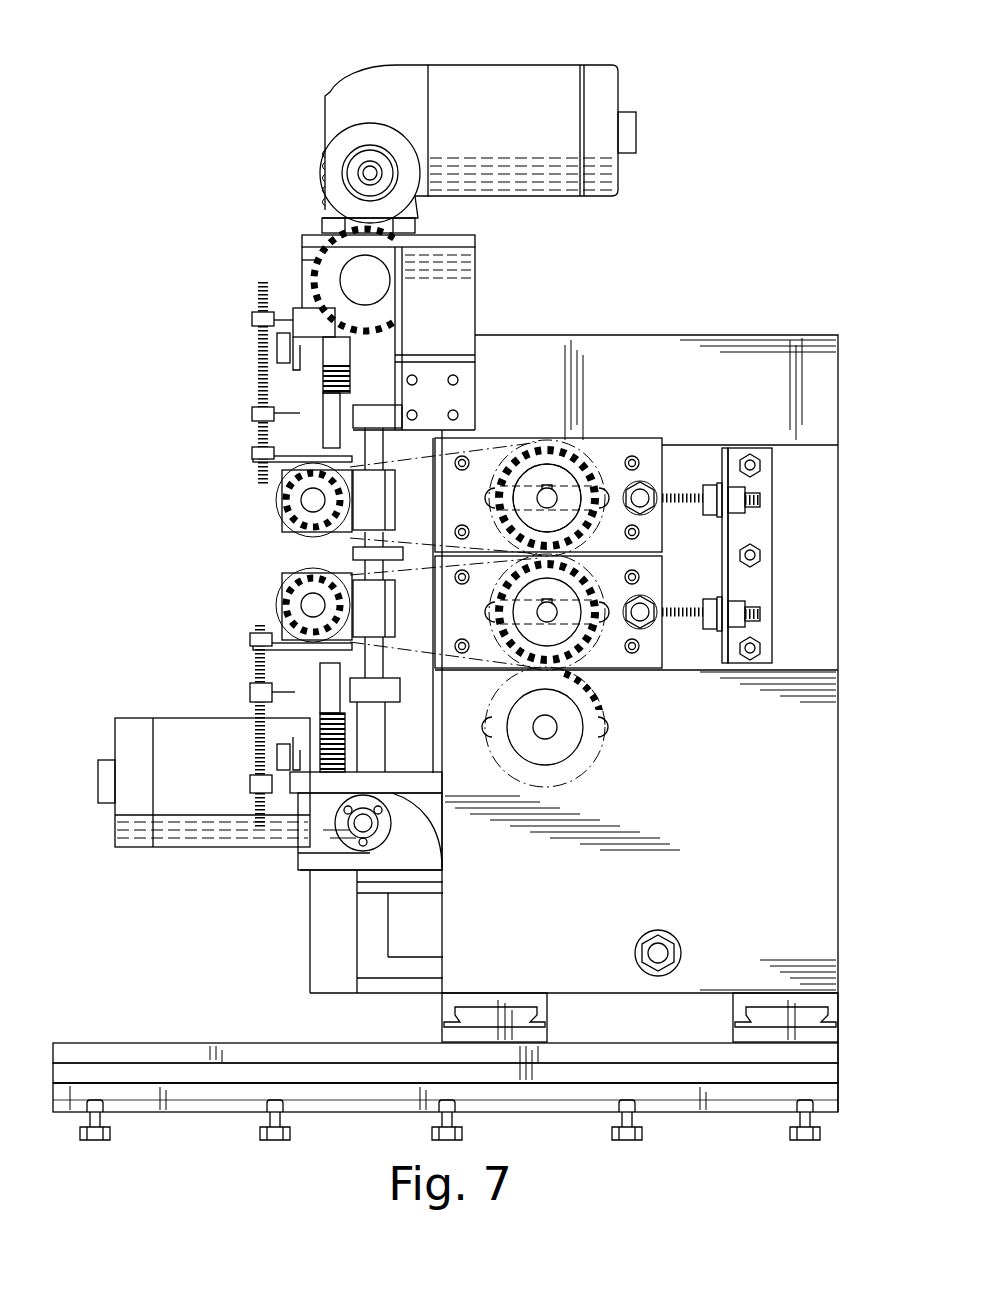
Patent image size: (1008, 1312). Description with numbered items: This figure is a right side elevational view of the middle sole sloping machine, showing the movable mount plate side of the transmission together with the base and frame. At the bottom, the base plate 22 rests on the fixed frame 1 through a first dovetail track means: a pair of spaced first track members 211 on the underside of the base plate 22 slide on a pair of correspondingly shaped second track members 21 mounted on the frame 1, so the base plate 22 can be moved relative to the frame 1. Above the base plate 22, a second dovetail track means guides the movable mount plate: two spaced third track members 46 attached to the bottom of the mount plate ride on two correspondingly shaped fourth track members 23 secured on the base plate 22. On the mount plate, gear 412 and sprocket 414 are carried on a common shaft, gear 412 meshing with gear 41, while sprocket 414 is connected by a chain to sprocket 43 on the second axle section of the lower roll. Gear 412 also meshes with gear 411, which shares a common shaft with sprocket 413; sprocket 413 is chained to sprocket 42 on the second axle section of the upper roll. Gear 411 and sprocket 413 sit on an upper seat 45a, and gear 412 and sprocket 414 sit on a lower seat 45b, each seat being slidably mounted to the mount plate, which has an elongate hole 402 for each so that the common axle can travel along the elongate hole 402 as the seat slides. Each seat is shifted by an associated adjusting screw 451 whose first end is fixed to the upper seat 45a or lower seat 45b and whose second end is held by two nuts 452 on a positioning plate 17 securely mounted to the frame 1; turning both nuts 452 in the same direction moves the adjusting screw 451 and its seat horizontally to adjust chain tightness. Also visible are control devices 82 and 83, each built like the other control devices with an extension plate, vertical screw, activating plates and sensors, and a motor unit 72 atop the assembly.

The fixed frame 1 is at (830, 550).
The positioning plate 17 is at (724, 573).
The second track members 21 is at (832, 1103).
The first track members 211 is at (832, 1080).
The base plate 22 is at (832, 1057).
The fourth track members 23 is at (832, 1032).
The gear 41 is at (582, 746).
The sprocket 42 is at (305, 503).
The sprocket 43 is at (305, 606).
The upper seat 45a is at (652, 540).
The lower seat 45b is at (652, 582).
The third track members 46 is at (832, 1008).
The drive motor 72 is at (520, 57).
The control device 82 is at (247, 389).
The control device 83 is at (245, 760).
The elongate hole 402 is at (504, 446).
The gear 411 is at (575, 453).
The gear 412 is at (600, 633).
The sprocket 413 is at (583, 487).
The sprocket 414 is at (577, 643).
The adjusting screw 451 is at (683, 494).
The nuts 452 is at (744, 490).